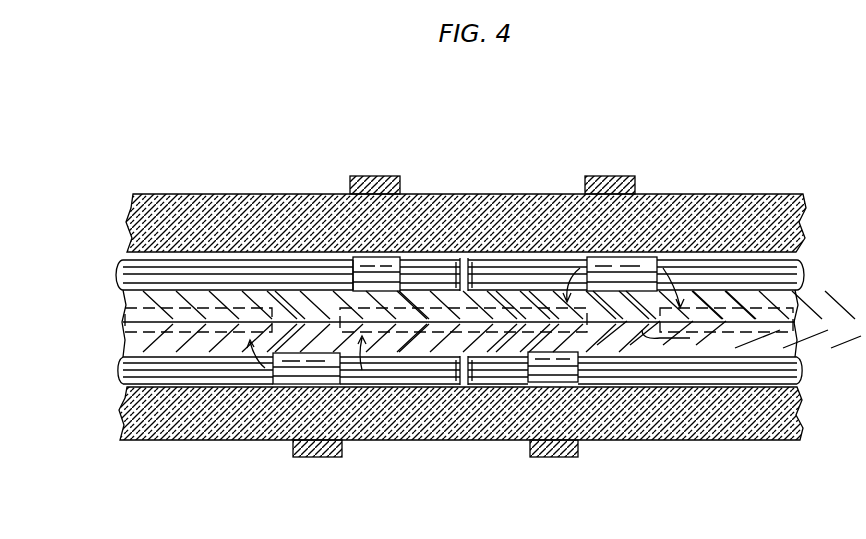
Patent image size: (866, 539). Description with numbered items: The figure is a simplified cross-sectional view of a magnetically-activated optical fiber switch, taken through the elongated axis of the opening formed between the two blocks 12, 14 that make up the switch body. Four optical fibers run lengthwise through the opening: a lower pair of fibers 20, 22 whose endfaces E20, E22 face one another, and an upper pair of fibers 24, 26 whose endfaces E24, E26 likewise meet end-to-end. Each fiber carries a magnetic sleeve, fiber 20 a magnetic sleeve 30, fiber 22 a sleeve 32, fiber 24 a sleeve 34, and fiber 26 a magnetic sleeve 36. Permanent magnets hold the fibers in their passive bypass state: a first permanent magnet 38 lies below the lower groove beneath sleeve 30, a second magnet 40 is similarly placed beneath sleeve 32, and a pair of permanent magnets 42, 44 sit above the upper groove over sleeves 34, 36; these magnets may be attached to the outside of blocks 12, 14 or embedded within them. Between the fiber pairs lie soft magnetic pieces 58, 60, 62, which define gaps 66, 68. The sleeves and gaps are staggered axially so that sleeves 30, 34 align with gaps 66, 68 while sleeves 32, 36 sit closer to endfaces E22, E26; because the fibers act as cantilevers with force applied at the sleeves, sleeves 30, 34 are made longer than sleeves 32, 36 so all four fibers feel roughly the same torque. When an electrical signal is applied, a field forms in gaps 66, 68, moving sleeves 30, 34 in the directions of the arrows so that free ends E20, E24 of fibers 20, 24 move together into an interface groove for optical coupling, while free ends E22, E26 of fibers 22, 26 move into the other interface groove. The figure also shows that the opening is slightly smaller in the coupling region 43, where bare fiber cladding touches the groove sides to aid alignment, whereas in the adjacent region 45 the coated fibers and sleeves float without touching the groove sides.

The block 12 is at (778, 420).
The block 14 is at (780, 206).
The fiber 20 is at (135, 368).
The fiber 22 is at (790, 362).
The fiber 24 is at (792, 270).
The fiber 26 is at (120, 272).
The magnetic sleeve 30 is at (307, 374).
The sleeve 32 is at (560, 376).
The sleeve 34 is at (638, 270).
The magnetic sleeve 36 is at (356, 270).
The permanent magnet 38 is at (322, 458).
The magnet 40 is at (562, 458).
The permanent magnet 42 is at (612, 188).
The coupling region 43 is at (468, 268).
The permanent magnet 44 is at (376, 186).
The region 45 is at (395, 262).
The soft magnetic piece 58 is at (122, 312).
The soft magnetic piece 60 is at (394, 335).
The soft magnetic piece 62 is at (768, 308).
The gap 66 is at (318, 312).
The gap 68 is at (790, 333).
The endface E20 is at (460, 357).
The endface E22 is at (483, 357).
The endface E24 is at (482, 262).
The endface E26 is at (452, 270).